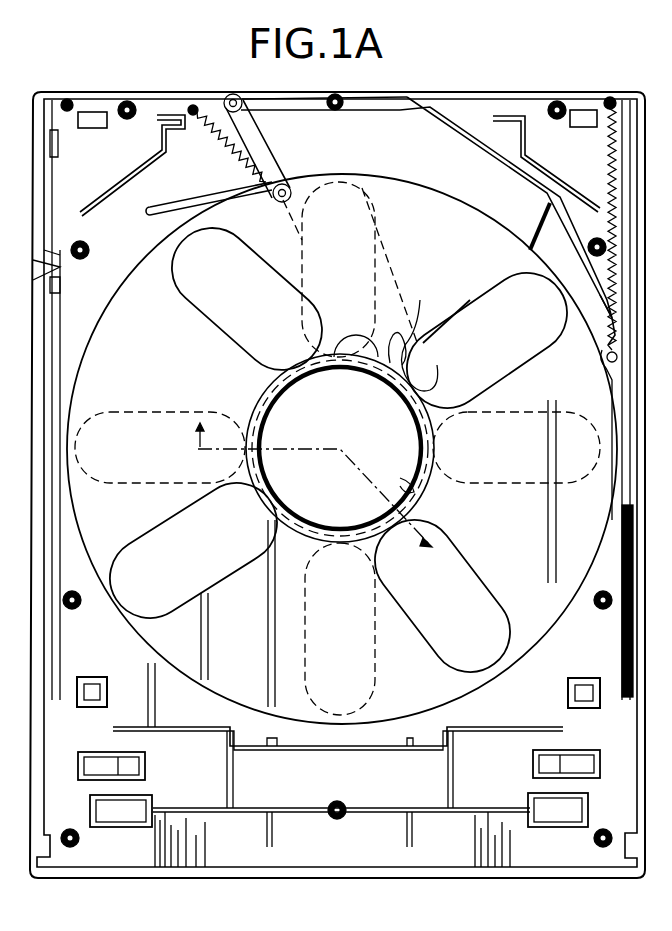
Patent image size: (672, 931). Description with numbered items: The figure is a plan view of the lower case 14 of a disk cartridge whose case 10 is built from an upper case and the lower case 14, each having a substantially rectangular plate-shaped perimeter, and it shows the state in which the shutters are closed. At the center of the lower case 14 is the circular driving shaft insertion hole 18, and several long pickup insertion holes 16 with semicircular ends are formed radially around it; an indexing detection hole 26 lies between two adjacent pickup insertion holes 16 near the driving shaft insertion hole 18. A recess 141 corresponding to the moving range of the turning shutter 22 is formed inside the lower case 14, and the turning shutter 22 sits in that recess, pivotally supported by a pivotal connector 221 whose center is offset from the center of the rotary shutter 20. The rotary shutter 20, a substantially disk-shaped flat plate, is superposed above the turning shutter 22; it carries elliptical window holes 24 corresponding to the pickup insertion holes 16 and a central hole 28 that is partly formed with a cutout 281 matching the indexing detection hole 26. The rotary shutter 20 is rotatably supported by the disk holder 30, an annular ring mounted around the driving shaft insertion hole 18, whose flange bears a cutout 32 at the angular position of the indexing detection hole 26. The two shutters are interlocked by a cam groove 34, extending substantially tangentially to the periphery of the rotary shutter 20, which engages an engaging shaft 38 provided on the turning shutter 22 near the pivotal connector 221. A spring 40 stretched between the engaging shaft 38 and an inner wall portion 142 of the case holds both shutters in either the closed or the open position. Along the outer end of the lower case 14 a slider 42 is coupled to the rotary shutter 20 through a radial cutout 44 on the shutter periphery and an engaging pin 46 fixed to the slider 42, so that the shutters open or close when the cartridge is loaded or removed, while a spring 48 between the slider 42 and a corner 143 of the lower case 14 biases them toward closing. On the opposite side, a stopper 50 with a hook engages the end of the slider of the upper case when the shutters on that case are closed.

The case 10 is at (627, 70).
The lower case 14 is at (516, 92).
The recess 141 is at (494, 194).
The inner wall portion 142 is at (157, 117).
The corner 143 is at (607, 123).
The pickup insertion holes 16 is at (373, 265).
The driving shaft insertion hole 18 is at (410, 488).
The rotary shutter 20 is at (556, 606).
The turning shutter 22 is at (400, 335).
The pivotal connector 221 is at (268, 120).
The window holes 24 is at (180, 298).
The indexing detection hole 26 is at (432, 345).
The central hole 28 is at (415, 425).
The cutout 281 is at (358, 372).
The disk holder 30 is at (432, 468).
The cutout 32 is at (395, 352).
The cam groove 34 is at (180, 207).
The engaging shaft 38 is at (283, 201).
The spring 40 is at (218, 145).
The slider 42 is at (610, 312).
The radial cutout 44 is at (607, 362).
The engaging pin 46 is at (607, 362).
The spring 48 is at (612, 180).
The stopper 50 is at (98, 268).